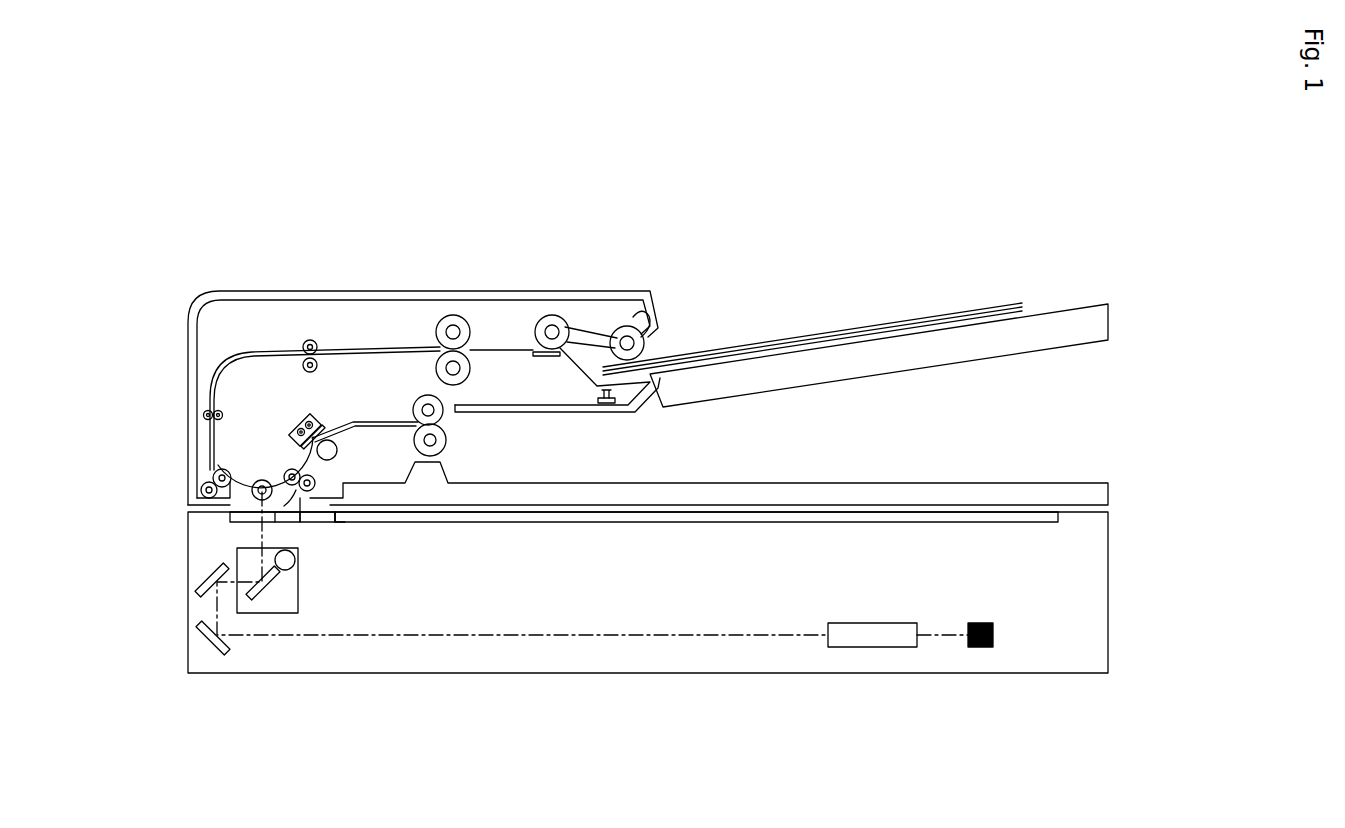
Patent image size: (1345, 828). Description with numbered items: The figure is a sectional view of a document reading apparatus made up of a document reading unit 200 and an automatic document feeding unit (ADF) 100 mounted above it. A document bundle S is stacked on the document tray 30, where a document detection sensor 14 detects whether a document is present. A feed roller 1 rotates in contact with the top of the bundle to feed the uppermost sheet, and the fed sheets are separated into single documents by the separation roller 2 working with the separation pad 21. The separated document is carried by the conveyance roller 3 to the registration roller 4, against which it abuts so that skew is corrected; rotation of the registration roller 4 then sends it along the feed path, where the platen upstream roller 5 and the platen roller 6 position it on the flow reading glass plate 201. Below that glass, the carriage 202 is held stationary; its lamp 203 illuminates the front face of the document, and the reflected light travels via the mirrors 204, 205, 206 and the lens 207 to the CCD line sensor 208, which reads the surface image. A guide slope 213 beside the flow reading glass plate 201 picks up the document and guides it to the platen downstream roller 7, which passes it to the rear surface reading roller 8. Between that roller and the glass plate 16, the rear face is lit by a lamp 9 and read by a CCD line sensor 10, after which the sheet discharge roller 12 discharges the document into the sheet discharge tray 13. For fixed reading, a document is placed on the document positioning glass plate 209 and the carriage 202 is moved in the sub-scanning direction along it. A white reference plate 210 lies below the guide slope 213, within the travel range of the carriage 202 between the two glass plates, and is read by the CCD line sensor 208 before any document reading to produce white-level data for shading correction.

The automatic document feeding unit 100 is at (237, 291).
The registration roller 4 is at (318, 343).
The conveyance roller 3 is at (455, 316).
The separation roller 2 is at (548, 316).
The feed roller 1 is at (637, 313).
The document bundle S is at (808, 337).
The document tray 30 is at (793, 386).
The sheet discharge roller 12 is at (418, 400).
The separation pad 21 is at (543, 357).
The sheet discharge tray 13 is at (493, 480).
The document detection sensor 14 is at (610, 404).
The lamp 9 is at (312, 420).
The CCD line sensor 10 is at (293, 428).
The glass plate 16 is at (320, 422).
The rear surface reading roller 8 is at (337, 447).
The platen downstream roller 7 is at (313, 482).
The platen upstream roller 5 is at (228, 470).
The platen roller 6 is at (260, 478).
The document reading unit 200 is at (1057, 675).
The flow reading glass plate 201 is at (230, 527).
The guide slope 213 is at (305, 515).
The white reference plate 210 is at (325, 523).
The document positioning glass plate 209 is at (597, 513).
The carriage 202 is at (237, 552).
The lamp 203 is at (300, 577).
The mirror 204 is at (273, 580).
The mirror 205 is at (192, 603).
The mirror 206 is at (225, 656).
The lens 207 is at (863, 623).
The CCD line sensor 208 is at (975, 623).